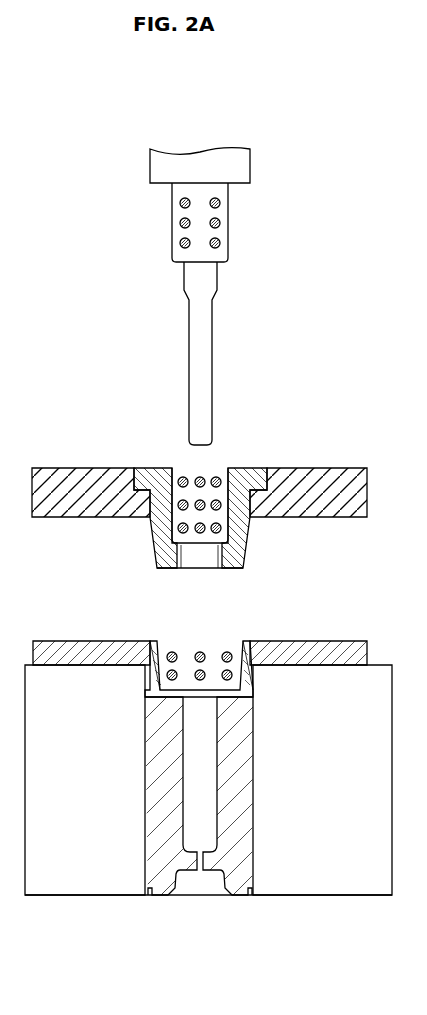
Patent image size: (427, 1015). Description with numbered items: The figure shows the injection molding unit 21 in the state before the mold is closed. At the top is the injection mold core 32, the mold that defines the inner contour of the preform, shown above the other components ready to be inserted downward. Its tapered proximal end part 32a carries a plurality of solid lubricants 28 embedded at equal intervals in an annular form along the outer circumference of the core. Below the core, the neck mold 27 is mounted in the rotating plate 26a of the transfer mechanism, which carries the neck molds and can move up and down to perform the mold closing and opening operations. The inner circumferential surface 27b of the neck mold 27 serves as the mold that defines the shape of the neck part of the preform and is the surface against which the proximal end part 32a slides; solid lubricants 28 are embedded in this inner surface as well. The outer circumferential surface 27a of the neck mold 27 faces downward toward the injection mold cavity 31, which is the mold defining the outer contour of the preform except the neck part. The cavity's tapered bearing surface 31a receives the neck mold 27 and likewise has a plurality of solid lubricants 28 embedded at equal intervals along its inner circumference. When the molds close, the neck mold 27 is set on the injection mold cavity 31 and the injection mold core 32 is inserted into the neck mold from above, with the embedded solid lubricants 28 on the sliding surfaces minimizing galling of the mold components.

The injection molding unit 21 is at (322, 143).
The injection mold core 32 is at (128, 165).
The tapered proximal end part 32a is at (172, 223).
The solid lubricants 28 is at (215, 223).
The rotating plate 26a is at (336, 468).
The neck mold 27 is at (240, 468).
The inner circumferential surface 27b is at (177, 470).
The outer circumferential surface 27a is at (155, 540).
The injection mold cavity 31 is at (230, 905).
The tapered bearing surface 31a is at (173, 648).